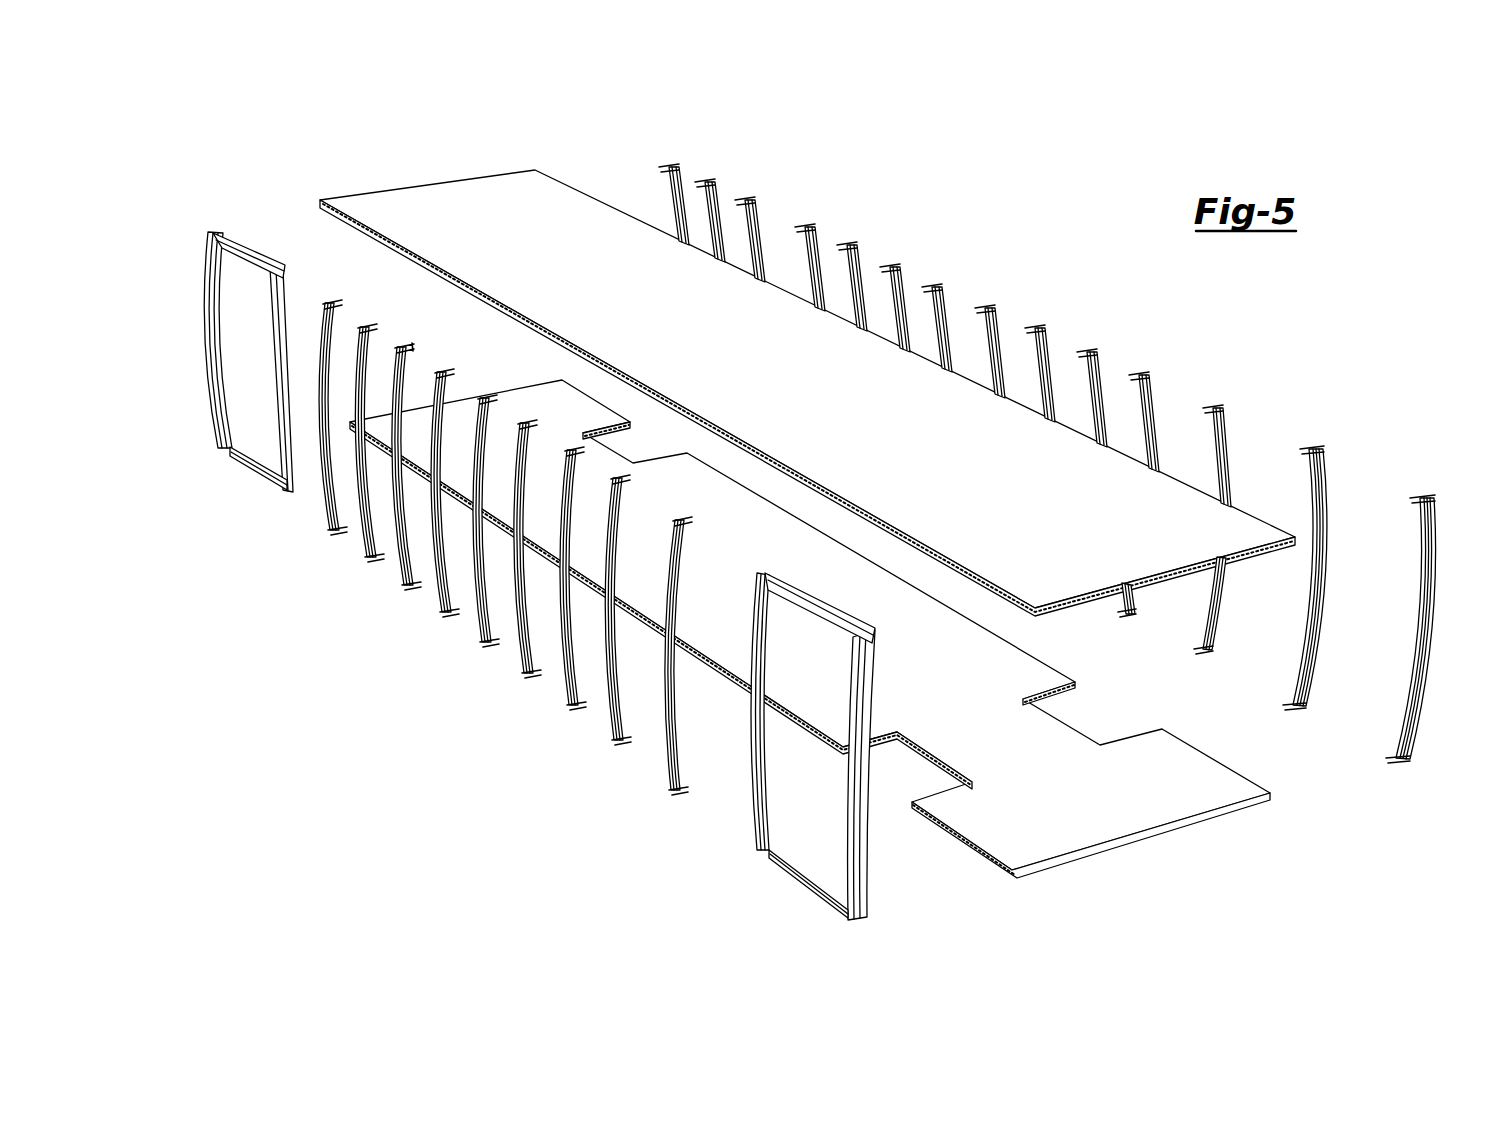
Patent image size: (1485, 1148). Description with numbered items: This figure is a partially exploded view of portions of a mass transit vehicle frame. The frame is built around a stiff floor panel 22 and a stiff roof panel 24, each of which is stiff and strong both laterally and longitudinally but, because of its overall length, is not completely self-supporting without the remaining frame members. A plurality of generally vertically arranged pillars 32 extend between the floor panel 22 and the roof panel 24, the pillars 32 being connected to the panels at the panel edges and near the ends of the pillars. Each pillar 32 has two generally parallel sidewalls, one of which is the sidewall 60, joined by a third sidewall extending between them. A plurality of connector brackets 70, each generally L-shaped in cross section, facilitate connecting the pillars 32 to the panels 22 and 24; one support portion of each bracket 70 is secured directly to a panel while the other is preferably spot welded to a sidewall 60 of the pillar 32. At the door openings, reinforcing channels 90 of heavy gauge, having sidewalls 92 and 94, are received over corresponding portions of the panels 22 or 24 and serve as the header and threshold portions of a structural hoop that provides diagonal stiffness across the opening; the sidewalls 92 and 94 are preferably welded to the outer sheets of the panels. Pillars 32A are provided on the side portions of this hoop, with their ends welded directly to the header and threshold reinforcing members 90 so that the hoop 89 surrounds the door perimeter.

The floor panel 22 is at (721, 543).
The roof panel 24 is at (686, 331).
The pillars 32 is at (512, 647).
The pillars 32A is at (277, 328).
The sidewall 60 is at (368, 325).
The connector brackets 70 is at (372, 562).
The end frame assembly 89 is at (561, 555).
The reinforcing channels 90 is at (571, 541).
The sidewall 92 is at (252, 246).
The sidewall 94 is at (280, 290).